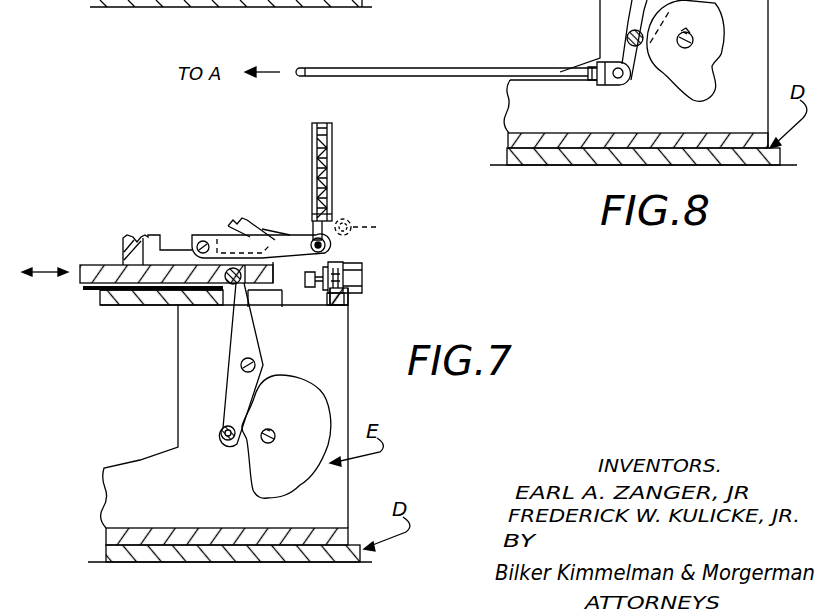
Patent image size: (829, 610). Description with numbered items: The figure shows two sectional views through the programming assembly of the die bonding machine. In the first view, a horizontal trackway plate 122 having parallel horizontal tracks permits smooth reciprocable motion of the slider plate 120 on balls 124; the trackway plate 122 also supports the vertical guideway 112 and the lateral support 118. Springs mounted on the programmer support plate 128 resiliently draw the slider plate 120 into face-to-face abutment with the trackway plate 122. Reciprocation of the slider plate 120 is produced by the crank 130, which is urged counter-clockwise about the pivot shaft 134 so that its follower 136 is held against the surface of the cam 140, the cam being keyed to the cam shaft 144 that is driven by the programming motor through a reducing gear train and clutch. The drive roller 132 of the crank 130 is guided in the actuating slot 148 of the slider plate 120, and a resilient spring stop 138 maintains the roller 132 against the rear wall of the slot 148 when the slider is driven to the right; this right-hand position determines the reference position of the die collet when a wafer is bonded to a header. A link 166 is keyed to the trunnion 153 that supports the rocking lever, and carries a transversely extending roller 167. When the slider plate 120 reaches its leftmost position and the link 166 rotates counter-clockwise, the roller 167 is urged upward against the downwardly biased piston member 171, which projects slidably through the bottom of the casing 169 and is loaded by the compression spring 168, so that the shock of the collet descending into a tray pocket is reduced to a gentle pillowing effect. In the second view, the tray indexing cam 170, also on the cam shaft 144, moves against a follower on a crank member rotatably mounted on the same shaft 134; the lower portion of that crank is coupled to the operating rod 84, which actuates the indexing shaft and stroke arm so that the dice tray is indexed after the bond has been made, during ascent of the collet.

In FIG. 8, the rod 84 is at (471, 70).
In FIG. 7, the vertical guideway 112 is at (135, 237).
In FIG. 7, the lateral support 118 is at (241, 222).
In FIG. 7, the slider plate 120 is at (100, 240).
In FIG. 7, the trackway plate 122 is at (100, 300).
In FIG. 7, the balls 124 is at (112, 307).
In FIG. 7, the programmer support plate 128 is at (113, 505).
In FIG. 8, the programmer support plate 128 is at (513, 113).
In FIG. 7, the crank 130 is at (247, 326).
In FIG. 8, the crank 130 is at (629, 42).
In FIG. 7, the drive roller 132 is at (234, 287).
In FIG. 7, the pivot shaft 134 is at (256, 362).
In FIG. 7, the follower 136 is at (225, 441).
In FIG. 7, the resilient spring stop 138 is at (363, 284).
In FIG. 7, the cam 140 is at (298, 482).
In FIG. 7, the cam shaft 144 is at (297, 412).
In FIG. 8, the cam shaft 144 is at (695, 33).
In FIG. 7, the actuating slot 148 is at (268, 268).
In FIG. 7, the trunnion 153 is at (205, 242).
In FIG. 7, the link 166 is at (291, 240).
In FIG. 7, the roller 167 is at (326, 247).
In FIG. 7, the compression spring 168 is at (332, 147).
In FIG. 7, the casing 169 is at (333, 168).
In FIG. 8, the tray indexing cam 170 is at (700, 78).
In FIG. 7, the piston member 171 is at (323, 221).